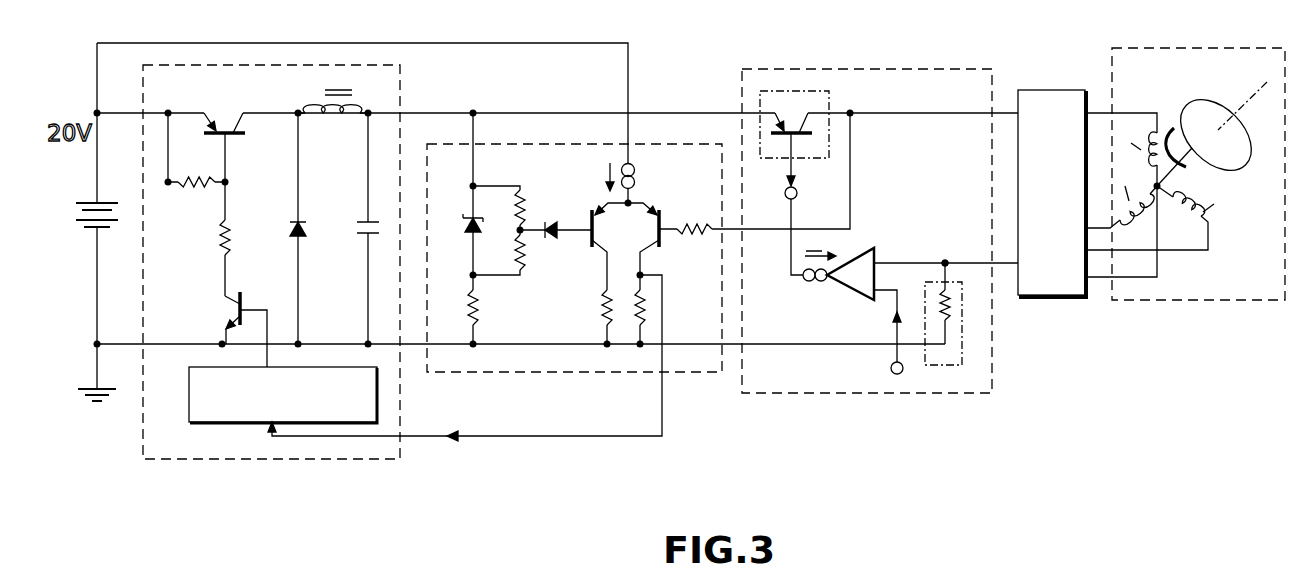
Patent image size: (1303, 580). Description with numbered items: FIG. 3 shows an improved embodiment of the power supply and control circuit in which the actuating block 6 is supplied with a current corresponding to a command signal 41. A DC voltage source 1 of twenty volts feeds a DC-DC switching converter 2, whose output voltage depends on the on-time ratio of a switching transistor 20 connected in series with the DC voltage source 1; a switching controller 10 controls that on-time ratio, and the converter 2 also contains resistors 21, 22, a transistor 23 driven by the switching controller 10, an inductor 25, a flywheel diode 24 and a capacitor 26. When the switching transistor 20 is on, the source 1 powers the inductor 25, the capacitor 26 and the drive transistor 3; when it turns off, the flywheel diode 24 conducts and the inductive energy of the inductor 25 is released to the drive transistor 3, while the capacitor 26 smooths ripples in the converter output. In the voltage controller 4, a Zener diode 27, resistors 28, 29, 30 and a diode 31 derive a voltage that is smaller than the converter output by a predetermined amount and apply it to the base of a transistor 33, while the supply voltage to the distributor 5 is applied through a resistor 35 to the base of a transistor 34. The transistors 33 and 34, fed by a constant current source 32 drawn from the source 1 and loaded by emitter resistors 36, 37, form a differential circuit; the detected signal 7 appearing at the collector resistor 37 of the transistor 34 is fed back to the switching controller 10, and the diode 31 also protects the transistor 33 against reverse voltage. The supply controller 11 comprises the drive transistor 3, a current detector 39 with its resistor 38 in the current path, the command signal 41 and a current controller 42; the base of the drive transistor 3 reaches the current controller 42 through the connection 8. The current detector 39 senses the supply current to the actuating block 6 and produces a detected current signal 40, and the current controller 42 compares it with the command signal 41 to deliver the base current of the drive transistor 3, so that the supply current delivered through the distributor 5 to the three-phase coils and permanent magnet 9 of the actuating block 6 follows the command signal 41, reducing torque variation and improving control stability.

The DC voltage source 1 is at (80, 222).
The DC-DC switching converter 2 is at (268, 460).
The drive transistor 3 is at (829, 100).
The voltage controller 4 is at (683, 372).
The distributor 5 is at (1053, 90).
The actuating block 6 is at (1165, 47).
The detected signal 7 is at (553, 437).
The contact point 8 is at (797, 165).
The permanent magnet 9 is at (1221, 105).
The switching controller 10 is at (205, 423).
The supply controller 11 is at (817, 395).
The switching transistor 20 is at (226, 133).
The resistor 21 is at (195, 188).
The resistor 22 is at (222, 226).
The transistor 23 is at (232, 308).
The flywheel diode 24 is at (303, 220).
The inductor 25 is at (341, 119).
The capacitor 26 is at (362, 235).
The Zener diode 27 is at (466, 242).
The resistor 28 is at (478, 320).
The resistor 29 is at (525, 270).
The resistor 30 is at (524, 196).
The diode 31 is at (551, 219).
The constant current source 32 is at (635, 176).
The transistor 33 is at (591, 252).
The transistor 34 is at (667, 250).
The resistor 35 is at (690, 224).
The resistor 36 is at (600, 305).
The collector resistor 37 is at (657, 308).
The resistor 38 is at (962, 315).
The current detector 39 is at (938, 262).
The detected current signal 40 is at (893, 262).
The command signal 41 is at (897, 333).
The current controller 42 is at (838, 287).